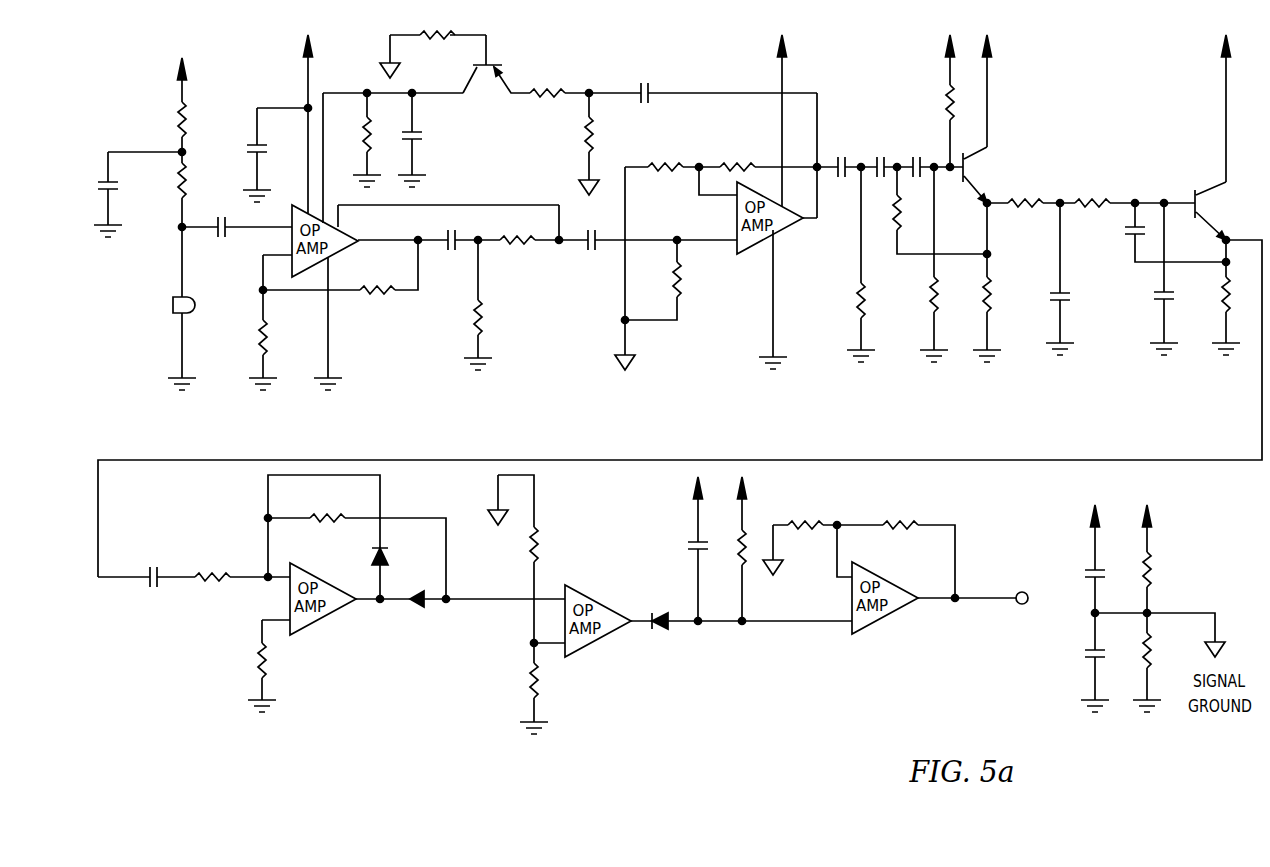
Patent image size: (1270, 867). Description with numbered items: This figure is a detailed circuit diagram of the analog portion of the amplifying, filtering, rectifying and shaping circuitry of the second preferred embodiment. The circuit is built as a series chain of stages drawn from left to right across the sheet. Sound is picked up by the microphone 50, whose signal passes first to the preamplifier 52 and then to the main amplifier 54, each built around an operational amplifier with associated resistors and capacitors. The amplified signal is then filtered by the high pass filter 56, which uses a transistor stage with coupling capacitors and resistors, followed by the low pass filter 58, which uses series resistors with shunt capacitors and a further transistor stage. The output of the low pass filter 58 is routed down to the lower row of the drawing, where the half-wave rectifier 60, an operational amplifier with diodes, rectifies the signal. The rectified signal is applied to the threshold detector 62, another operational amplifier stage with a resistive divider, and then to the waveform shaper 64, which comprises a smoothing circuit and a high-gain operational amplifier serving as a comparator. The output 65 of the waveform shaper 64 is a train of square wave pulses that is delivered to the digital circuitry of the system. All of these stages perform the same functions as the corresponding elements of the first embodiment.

The microphone 50 is at (173, 305).
The preamplifier 52 is at (195, 410).
The main amplifier 54 is at (832, 391).
The high pass filter 56 is at (845, 378).
The low pass filter 58 is at (1247, 363).
The half-wave rectifier 60 is at (133, 728).
The threshold detector 62 is at (683, 743).
The waveform shaper 64 is at (963, 681).
The output 65 is at (984, 598).